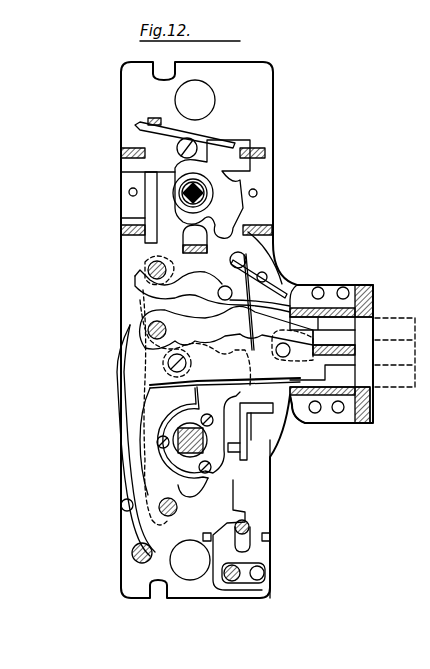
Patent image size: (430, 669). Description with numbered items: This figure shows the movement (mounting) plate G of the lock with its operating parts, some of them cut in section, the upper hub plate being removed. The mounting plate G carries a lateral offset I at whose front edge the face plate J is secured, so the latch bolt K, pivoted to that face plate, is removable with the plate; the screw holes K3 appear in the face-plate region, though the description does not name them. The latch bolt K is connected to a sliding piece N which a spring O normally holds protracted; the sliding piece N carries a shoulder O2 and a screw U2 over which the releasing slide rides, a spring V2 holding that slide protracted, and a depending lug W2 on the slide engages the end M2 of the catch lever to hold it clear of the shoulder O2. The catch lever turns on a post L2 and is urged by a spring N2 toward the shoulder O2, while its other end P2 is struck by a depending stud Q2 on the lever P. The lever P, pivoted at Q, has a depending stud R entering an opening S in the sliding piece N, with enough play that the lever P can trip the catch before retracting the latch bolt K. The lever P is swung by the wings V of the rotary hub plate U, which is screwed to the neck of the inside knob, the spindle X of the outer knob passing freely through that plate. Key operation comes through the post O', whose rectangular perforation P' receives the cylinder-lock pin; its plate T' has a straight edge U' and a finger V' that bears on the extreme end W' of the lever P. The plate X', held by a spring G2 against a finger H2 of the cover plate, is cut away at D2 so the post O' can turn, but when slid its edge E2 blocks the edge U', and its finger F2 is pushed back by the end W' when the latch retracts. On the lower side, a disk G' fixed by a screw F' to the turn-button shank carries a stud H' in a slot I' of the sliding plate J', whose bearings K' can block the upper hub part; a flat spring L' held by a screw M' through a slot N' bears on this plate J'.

The mounting plate G is at (247, 330).
The finger of cover plate H2 is at (155, 117).
The spring G2 is at (136, 125).
The plate X' is at (176, 183).
The laterally projecting finger F2 is at (150, 219).
The extreme end of lever W' is at (162, 207).
The edge E2 is at (165, 178).
The cut-away D2 is at (177, 144).
The straight edge U' is at (212, 188).
The post O' is at (238, 193).
The rectangular perforation P' is at (255, 171).
The plate T' is at (239, 201).
The laterally projecting finger V' is at (243, 231).
The depending stud Q2 is at (148, 272).
The end of catch lever P2 is at (140, 282).
The post L2 is at (220, 292).
The spring N2 is at (278, 278).
The lateral offset I is at (279, 258).
The opening S is at (148, 330).
The depending stud R is at (170, 342).
The spring V2 is at (195, 342).
The depending lug W2 is at (276, 338).
The screw U2 is at (283, 358).
The face plate J is at (340, 350).
The screw holes K3 is at (312, 296).
The end of catch lever M2 is at (336, 286).
The notch or shoulder O2 is at (352, 352).
The sliding piece N is at (225, 390).
The rotary plate U is at (162, 441).
The latch bolt K is at (206, 443).
The offsets or wings V is at (224, 466).
The spindle X is at (273, 519).
The spring O is at (119, 440).
The lever P is at (130, 407).
The pivot Q is at (132, 553).
The surfaces or bearings K' is at (237, 535).
The flat spring L' is at (263, 517).
The sliding plate J' is at (268, 529).
The screw M' is at (300, 530).
The slot N' is at (271, 544).
The stud H' is at (278, 575).
The slot I' is at (262, 582).
The screw F' is at (225, 595).
The disk G' is at (258, 608).